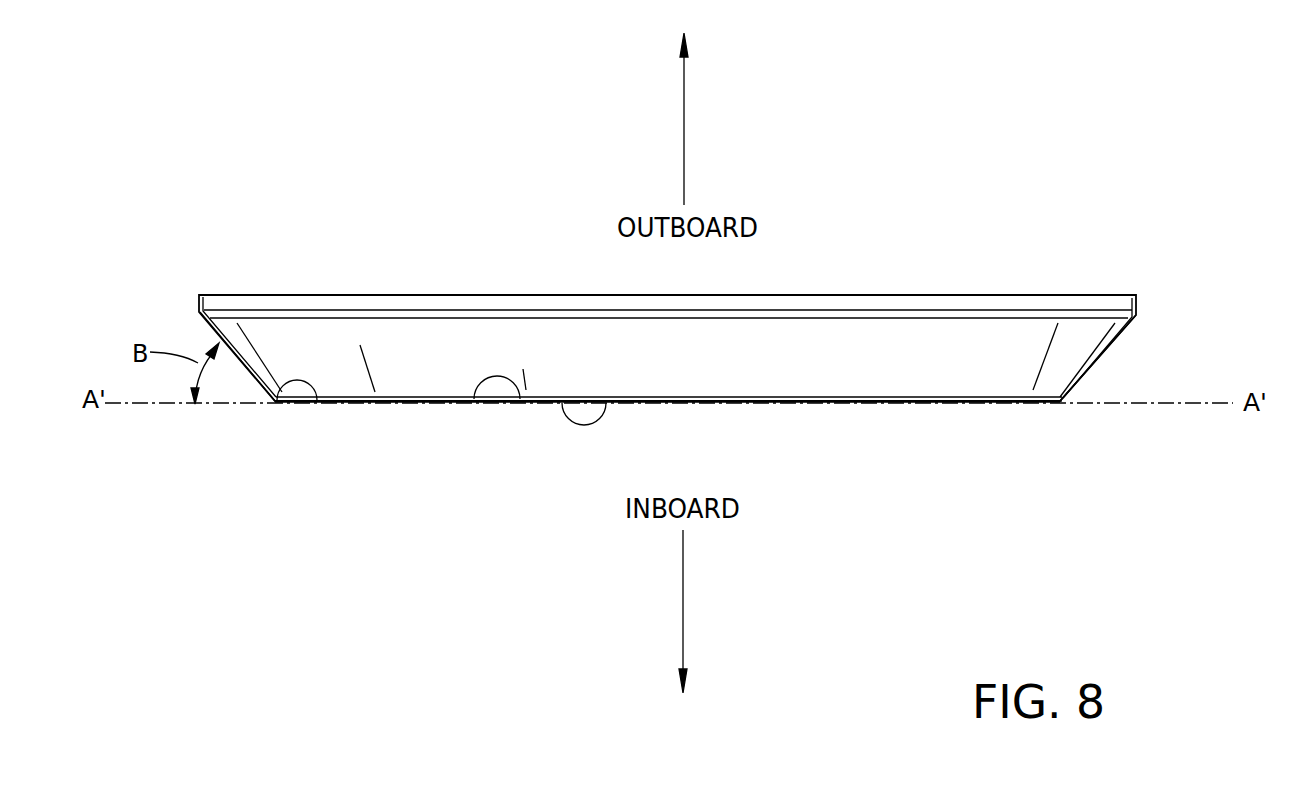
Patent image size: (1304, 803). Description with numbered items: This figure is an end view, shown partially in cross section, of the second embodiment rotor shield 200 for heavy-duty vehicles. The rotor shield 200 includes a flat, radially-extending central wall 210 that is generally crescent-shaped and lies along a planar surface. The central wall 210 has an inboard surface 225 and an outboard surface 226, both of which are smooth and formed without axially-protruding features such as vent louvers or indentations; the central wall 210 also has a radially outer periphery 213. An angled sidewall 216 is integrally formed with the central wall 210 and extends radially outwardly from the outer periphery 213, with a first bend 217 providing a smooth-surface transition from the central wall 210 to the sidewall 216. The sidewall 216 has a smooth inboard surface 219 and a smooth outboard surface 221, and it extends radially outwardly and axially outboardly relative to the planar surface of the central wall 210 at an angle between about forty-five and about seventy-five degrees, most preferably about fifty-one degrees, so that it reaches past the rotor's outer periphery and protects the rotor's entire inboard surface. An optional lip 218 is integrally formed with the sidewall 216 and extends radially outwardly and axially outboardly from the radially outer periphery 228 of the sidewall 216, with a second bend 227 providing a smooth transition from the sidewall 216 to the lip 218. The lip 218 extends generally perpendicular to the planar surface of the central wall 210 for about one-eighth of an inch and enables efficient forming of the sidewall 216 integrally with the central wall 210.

The rotor shield 200 is at (266, 178).
The central wall 210 is at (707, 403).
The radially outer periphery 213 is at (1050, 405).
The sidewall 216 is at (232, 366).
The first bend 217 is at (317, 400).
The lip 218 is at (198, 313).
The inboard surface 219 is at (1094, 371).
The outboard surface 221 is at (247, 357).
The inboard surface 225 is at (605, 400).
The outboard surface 226 is at (520, 399).
The second bend 227 is at (1127, 317).
The radially outer periphery 228 is at (220, 323).